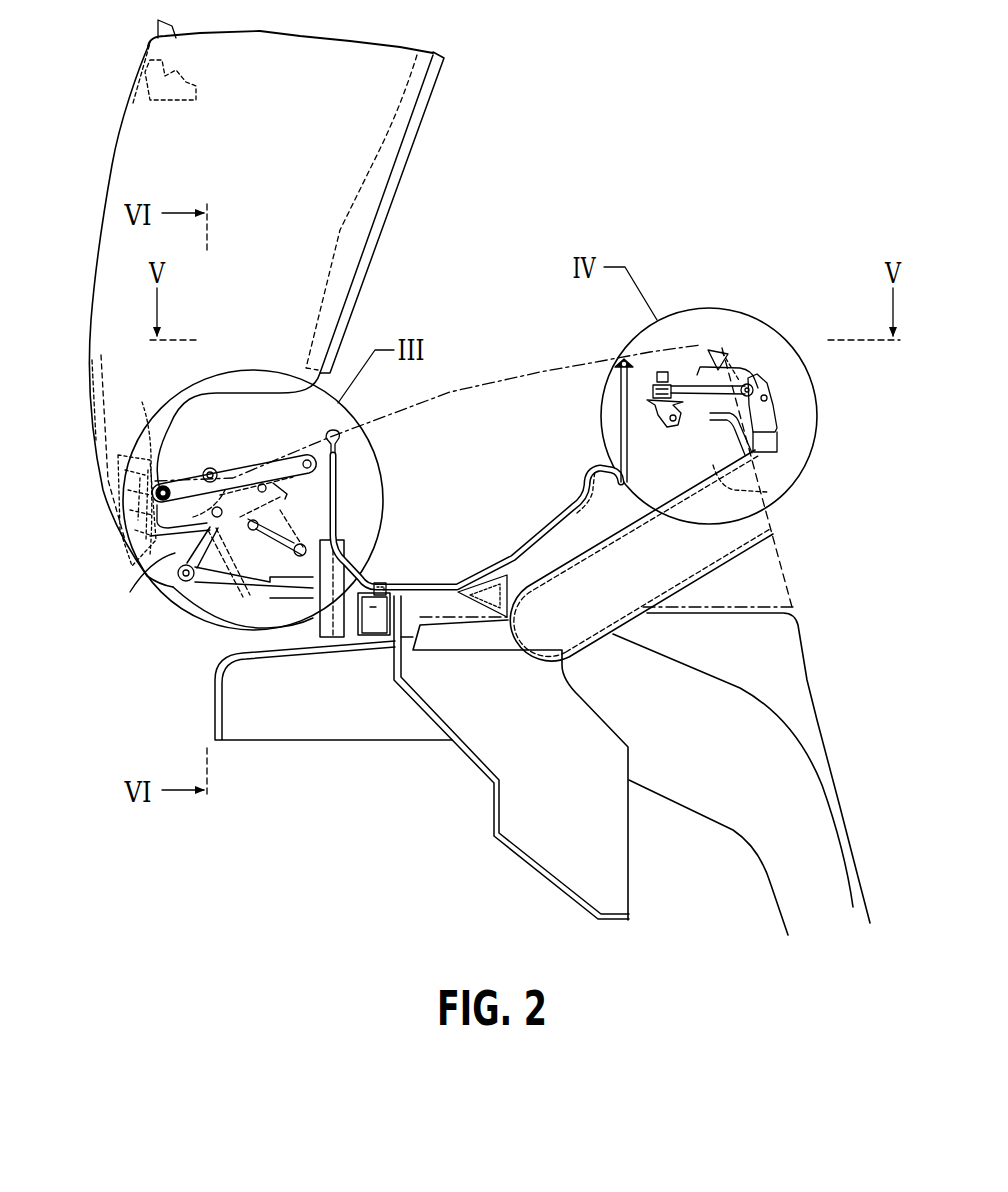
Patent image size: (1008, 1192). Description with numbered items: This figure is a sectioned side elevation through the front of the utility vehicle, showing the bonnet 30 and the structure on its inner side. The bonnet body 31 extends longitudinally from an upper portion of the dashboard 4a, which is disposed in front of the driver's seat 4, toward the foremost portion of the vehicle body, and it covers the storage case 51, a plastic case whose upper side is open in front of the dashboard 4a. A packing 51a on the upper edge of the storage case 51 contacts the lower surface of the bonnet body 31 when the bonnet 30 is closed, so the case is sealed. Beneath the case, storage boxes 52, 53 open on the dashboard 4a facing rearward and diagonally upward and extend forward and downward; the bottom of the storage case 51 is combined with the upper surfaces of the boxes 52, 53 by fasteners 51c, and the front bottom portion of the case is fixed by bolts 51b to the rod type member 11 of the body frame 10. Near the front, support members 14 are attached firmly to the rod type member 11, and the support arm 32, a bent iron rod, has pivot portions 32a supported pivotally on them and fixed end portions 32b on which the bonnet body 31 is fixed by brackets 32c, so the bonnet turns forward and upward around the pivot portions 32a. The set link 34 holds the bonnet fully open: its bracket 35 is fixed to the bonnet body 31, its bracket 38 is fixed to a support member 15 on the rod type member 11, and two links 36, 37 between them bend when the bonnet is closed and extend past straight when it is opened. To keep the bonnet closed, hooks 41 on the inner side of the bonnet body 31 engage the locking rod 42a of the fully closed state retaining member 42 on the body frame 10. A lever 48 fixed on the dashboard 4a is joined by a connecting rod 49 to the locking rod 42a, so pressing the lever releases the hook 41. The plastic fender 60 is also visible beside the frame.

The driver's seat 4 is at (841, 682).
The dashboard 4a is at (797, 562).
The body frame 10 is at (377, 630).
The rod type member 11 is at (359, 654).
The support member 14 is at (224, 614).
The support member 15 is at (341, 572).
The bonnet 30 is at (473, 132).
The bonnet body 31 is at (372, 212).
The support arm 32 is at (168, 580).
The pivot portion 32a is at (212, 598).
The fixed end portion 32b is at (136, 463).
The bracket 32c is at (118, 458).
The set link 34 is at (245, 435).
The bracket 35 is at (168, 483).
The link 36 is at (176, 480).
The link 37 is at (283, 473).
The bracket 38 is at (371, 539).
The hook 41 is at (197, 93).
The fully closed state retaining member 42 is at (660, 410).
The locking rod 42a is at (657, 383).
The lever 48 is at (770, 412).
The connecting rod 49 is at (690, 380).
The storage case 51 is at (619, 396).
The packing 51a is at (621, 361).
The bolt 51b is at (386, 582).
The fastener 51c is at (600, 468).
The storage box 52 is at (786, 487).
The storage box 53 is at (767, 492).
The fender 60 is at (763, 880).